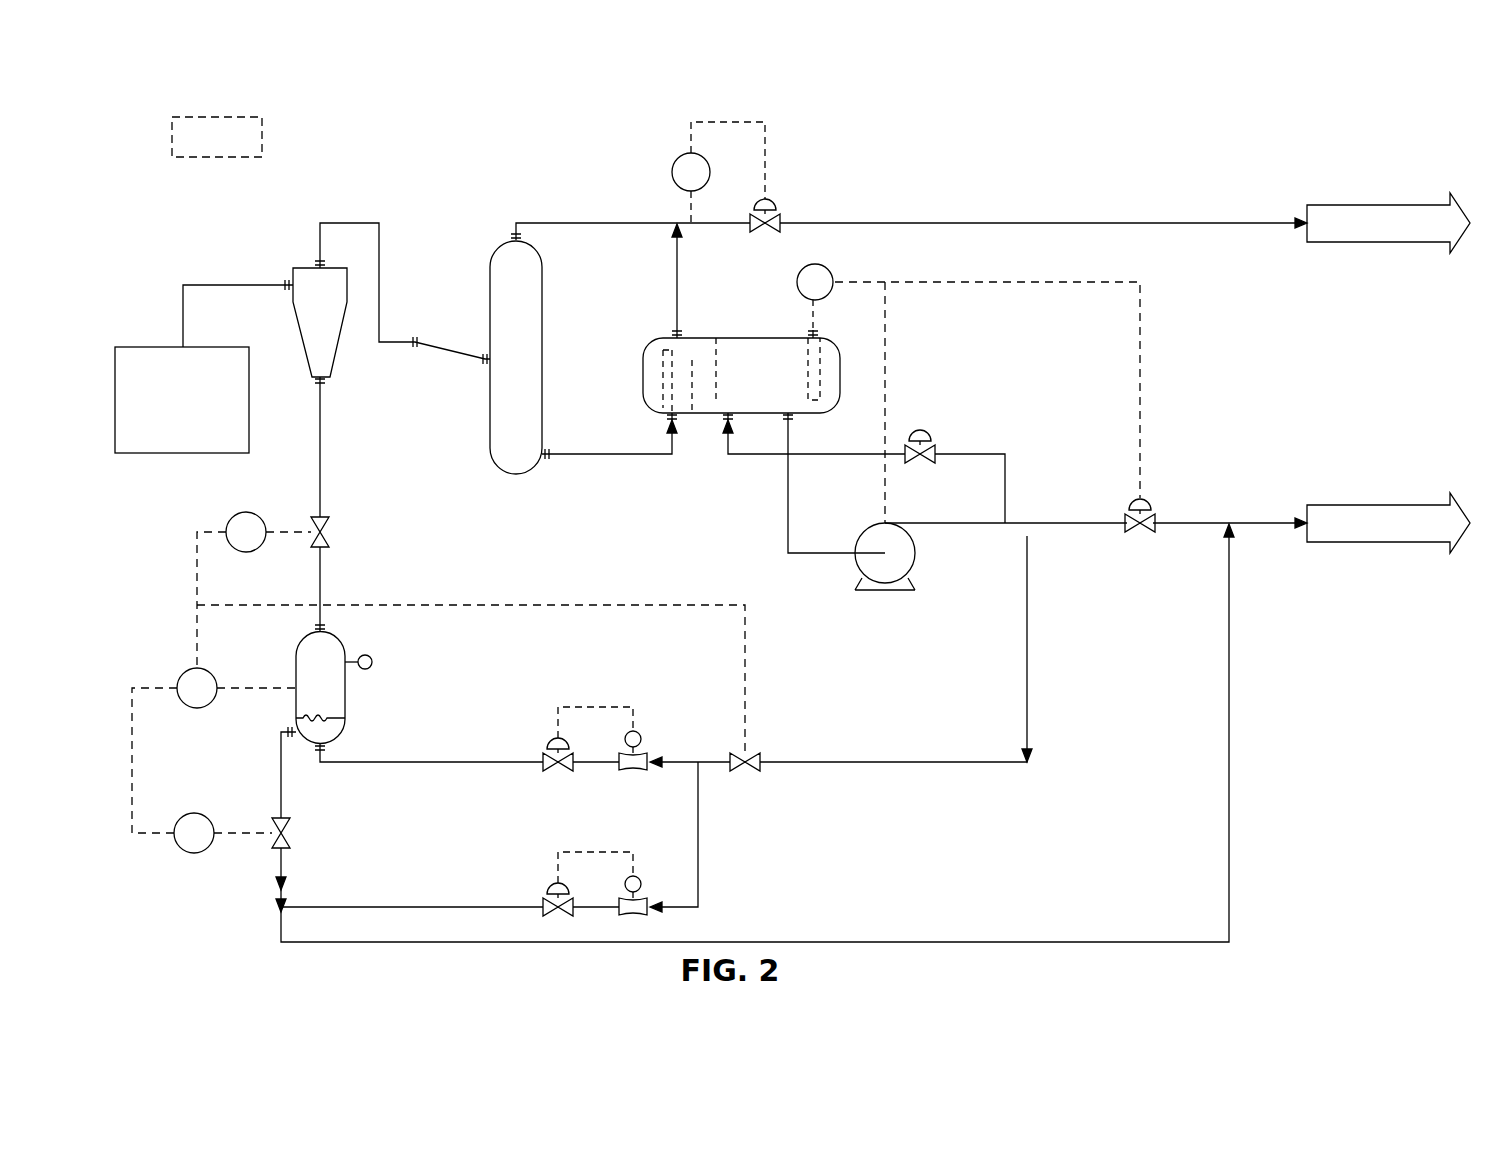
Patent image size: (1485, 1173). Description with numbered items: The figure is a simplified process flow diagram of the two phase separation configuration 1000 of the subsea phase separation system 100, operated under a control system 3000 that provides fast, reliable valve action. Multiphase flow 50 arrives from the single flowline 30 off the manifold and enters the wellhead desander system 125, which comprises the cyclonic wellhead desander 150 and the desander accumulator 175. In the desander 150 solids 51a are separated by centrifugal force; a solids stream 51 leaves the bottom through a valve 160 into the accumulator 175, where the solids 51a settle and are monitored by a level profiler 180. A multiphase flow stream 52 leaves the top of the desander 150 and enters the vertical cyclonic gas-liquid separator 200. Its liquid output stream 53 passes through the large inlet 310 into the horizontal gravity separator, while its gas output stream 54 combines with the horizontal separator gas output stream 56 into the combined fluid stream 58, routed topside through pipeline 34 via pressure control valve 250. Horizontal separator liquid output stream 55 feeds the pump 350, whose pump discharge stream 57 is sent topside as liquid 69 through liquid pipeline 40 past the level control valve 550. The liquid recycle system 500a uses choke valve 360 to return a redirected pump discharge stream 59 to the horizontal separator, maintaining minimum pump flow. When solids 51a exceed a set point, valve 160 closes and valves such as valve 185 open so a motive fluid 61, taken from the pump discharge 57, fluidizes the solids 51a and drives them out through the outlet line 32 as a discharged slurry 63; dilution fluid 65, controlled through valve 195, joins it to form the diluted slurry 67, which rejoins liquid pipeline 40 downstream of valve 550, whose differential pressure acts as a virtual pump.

The control system 3000 is at (217, 137).
The subsea phase separation system 100 is at (996, 100).
The two phase separation configuration 1000 is at (1086, 120).
The wellhead desander system 125 is at (347, 466).
The liquid recycle system 500a is at (958, 396).
The multiphase flow 50 is at (150, 347).
The single flowline 30 is at (218, 285).
The cyclonic wellhead desander 150 is at (313, 265).
The multiphase flow stream 52 is at (362, 222).
The vertical cyclonic gas-liquid separator 200 is at (544, 272).
The vertical separator gas output stream 54 is at (560, 222).
The pressure control valve 250 is at (763, 232).
The gas pipeline 34 is at (1160, 222).
The combined fluid stream 58 is at (1217, 226).
The horizontal separator gas output stream 56 is at (680, 300).
The inlet 310 is at (668, 424).
The vertical separator liquid output stream 53 is at (637, 456).
The redirected pump discharge stream 59 is at (765, 456).
The choke valve 360 is at (923, 464).
The horizontal separator liquid output stream 55 is at (790, 448).
The pump 350 is at (912, 578).
The pump discharge stream 57 is at (915, 522).
The level control valve 550 is at (1143, 531).
The liquid phase 69 is at (1247, 525).
The liquid pipeline 40 is at (1275, 522).
The solids stream 51 is at (325, 395).
The valve 160 is at (329, 537).
The desander accumulator 175 is at (347, 697).
The level profiler 180 is at (372, 655).
The solids 51a is at (335, 733).
The solids outlet line 32 is at (280, 768).
The discharged slurry 63 is at (283, 795).
The motive fluid 61 is at (357, 764).
The valve 185 is at (556, 768).
The flush control valve 195 is at (556, 913).
The dilution fluid 65 is at (346, 908).
The diluted slurry 67 is at (318, 943).